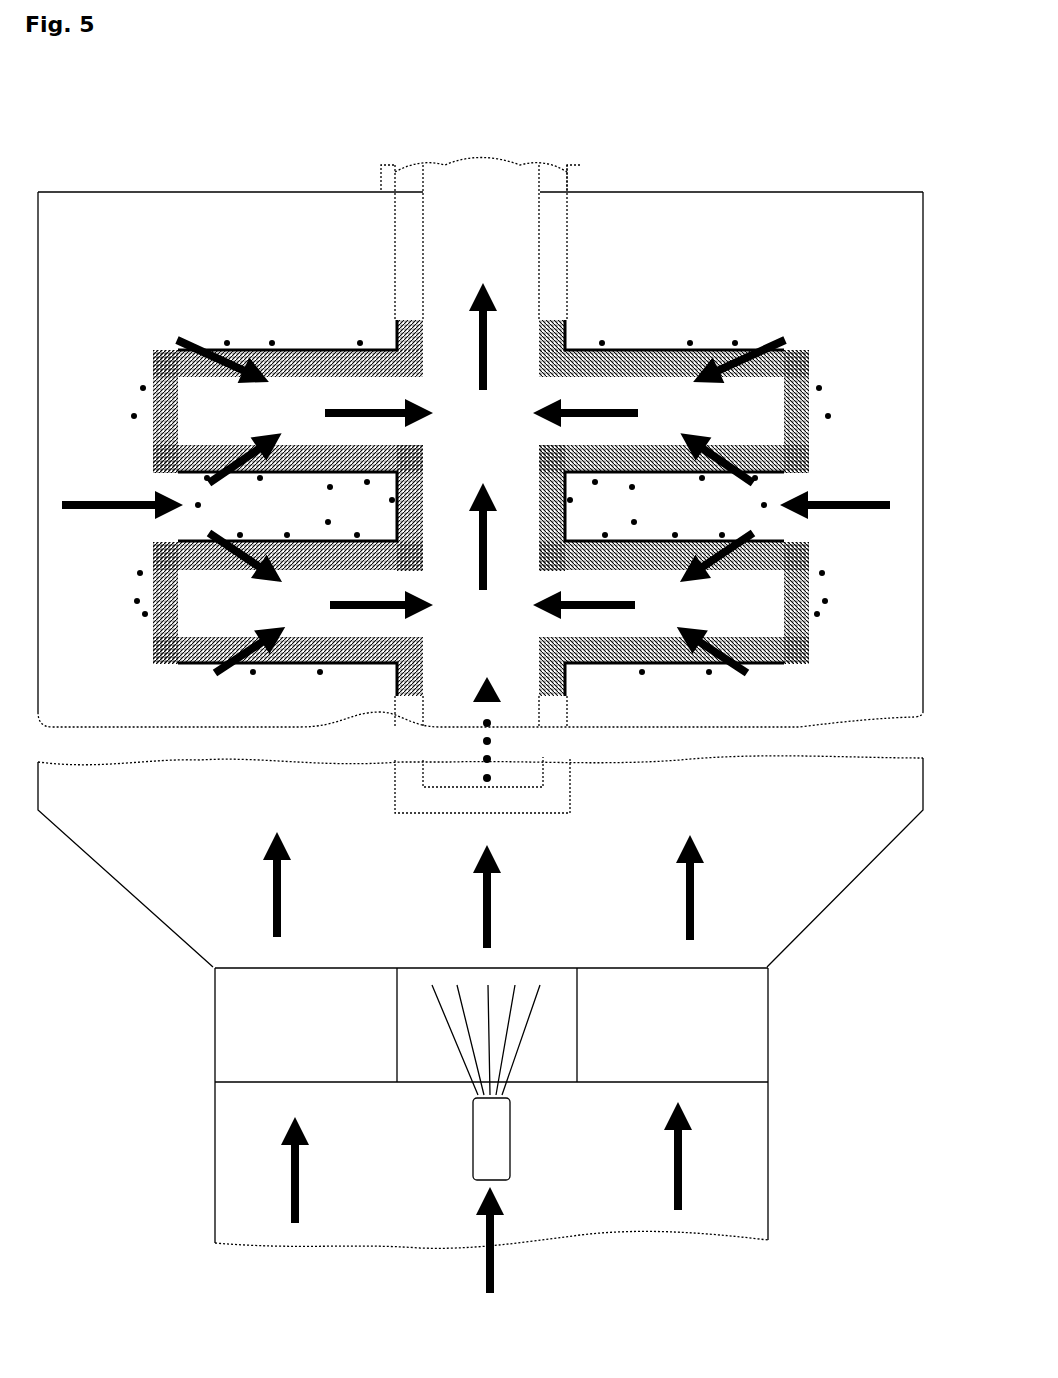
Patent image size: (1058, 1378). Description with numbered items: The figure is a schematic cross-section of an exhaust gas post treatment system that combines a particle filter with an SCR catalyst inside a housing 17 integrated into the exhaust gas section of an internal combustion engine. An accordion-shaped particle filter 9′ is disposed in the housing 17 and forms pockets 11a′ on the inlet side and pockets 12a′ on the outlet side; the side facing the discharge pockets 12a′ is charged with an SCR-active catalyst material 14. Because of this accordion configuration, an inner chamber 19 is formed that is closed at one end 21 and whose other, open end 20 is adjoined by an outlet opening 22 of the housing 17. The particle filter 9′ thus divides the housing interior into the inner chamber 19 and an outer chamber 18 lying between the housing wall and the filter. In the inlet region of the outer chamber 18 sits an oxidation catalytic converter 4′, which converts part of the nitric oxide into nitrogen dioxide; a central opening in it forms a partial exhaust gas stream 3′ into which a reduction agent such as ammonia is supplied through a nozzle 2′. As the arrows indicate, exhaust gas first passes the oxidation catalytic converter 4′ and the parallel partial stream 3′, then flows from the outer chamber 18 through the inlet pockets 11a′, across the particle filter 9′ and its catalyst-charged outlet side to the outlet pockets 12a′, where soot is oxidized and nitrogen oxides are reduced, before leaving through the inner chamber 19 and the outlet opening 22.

The particle filter 9′ is at (320, 350).
The outlet opening 22 is at (407, 200).
The open end 20 is at (483, 190).
The SCR-active catalyst material 14 is at (642, 343).
The pockets on the outlet side 12a′ is at (482, 509).
The pockets on the inlet side 11a′ is at (476, 505).
The inner chamber 19 is at (487, 710).
The outer chamber 18 is at (483, 890).
The housing 17 is at (130, 900).
The closed end 21 is at (507, 787).
The oxidation catalytic converter 4′ is at (491, 1130).
The partial exhaust gas stream 3′ is at (417, 1025).
The nozzle 2′ is at (491, 1139).